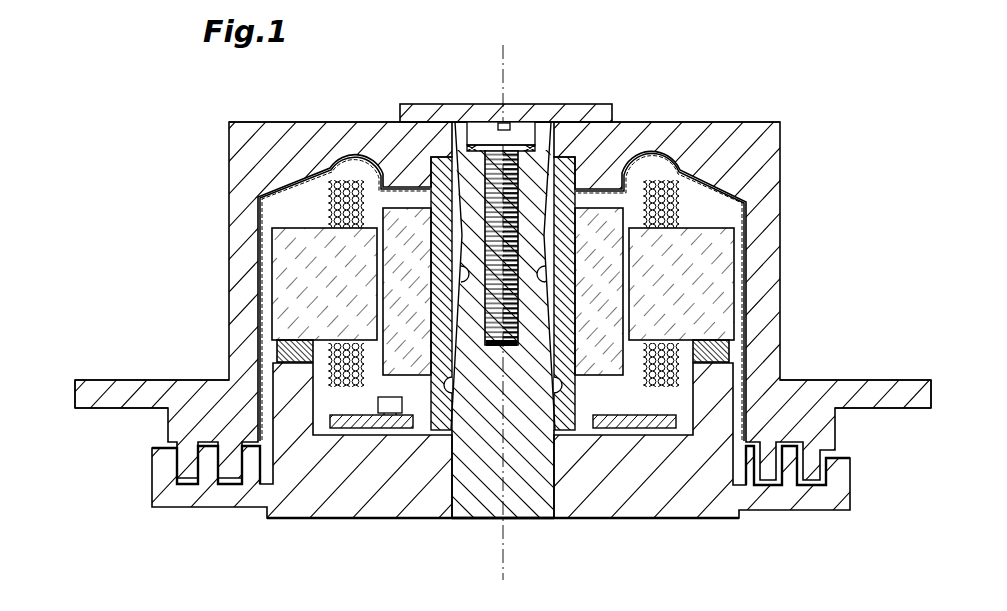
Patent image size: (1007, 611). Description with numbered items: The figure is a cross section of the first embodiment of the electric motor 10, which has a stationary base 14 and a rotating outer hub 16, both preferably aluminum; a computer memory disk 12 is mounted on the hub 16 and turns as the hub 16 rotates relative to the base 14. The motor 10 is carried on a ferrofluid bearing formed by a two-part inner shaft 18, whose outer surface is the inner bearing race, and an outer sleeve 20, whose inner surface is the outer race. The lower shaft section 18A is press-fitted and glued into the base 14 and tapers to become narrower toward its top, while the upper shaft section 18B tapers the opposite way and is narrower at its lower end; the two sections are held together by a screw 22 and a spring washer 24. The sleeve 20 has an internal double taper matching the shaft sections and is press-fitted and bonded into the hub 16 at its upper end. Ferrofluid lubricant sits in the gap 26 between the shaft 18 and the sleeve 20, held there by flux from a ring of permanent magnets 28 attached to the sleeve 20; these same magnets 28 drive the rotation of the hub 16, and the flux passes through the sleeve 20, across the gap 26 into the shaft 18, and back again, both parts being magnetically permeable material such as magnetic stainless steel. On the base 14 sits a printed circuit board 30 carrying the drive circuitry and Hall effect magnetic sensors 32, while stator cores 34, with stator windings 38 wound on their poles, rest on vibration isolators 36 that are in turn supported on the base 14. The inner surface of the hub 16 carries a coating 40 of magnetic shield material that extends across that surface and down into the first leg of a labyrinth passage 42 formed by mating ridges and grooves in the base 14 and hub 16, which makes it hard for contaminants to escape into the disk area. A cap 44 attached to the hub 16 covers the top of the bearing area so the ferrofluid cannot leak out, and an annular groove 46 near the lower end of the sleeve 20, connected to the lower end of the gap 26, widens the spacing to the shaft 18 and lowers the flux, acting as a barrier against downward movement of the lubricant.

The motor 10 is at (190, 236).
The computer memory disk 12 is at (141, 379).
The stationary base 14 is at (350, 520).
The rotating outer hub 16 is at (781, 154).
The inner shaft 18 is at (478, 525).
The lower shaft section 18A is at (526, 520).
The upper shaft section 18B is at (554, 122).
The outer sleeve 20 is at (606, 126).
The screw 22 is at (528, 128).
The spring washer 24 is at (471, 146).
The gap 26 is at (453, 176).
The permanent magnets 28 is at (422, 240).
The printed circuit board 30 is at (341, 430).
The Hall effect magnetic sensors 32 is at (392, 398).
The stator cores 34 is at (281, 270).
The vibration isolators 36 is at (290, 349).
The stator windings 38 is at (328, 204).
The coating 40 is at (335, 163).
The labyrinth passage 42 is at (234, 489).
The cap 44 is at (440, 104).
The annular groove 46 is at (447, 376).